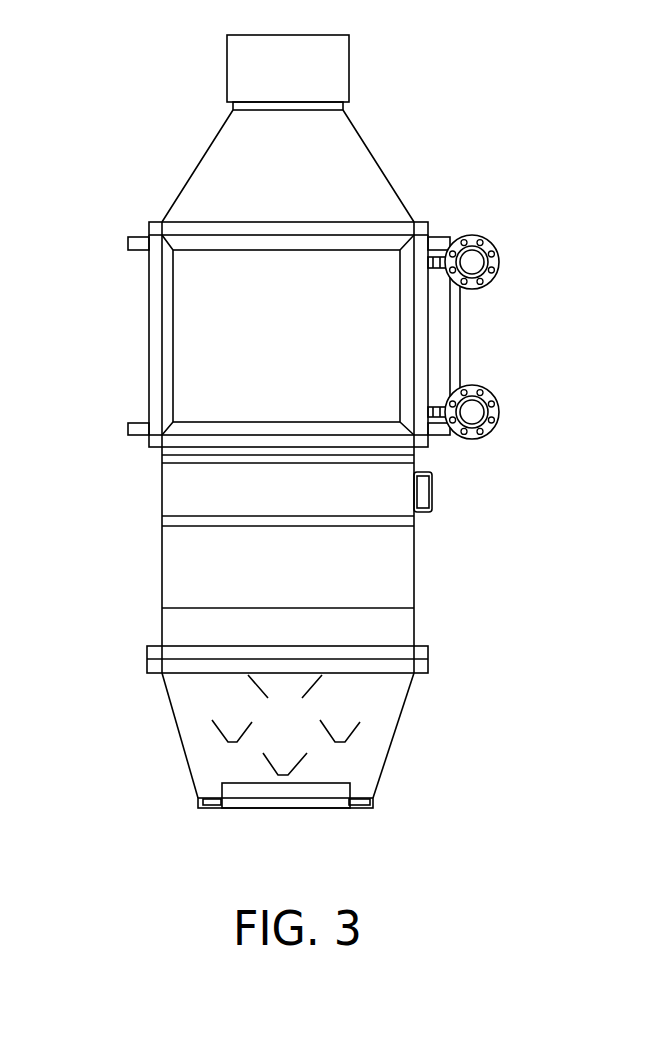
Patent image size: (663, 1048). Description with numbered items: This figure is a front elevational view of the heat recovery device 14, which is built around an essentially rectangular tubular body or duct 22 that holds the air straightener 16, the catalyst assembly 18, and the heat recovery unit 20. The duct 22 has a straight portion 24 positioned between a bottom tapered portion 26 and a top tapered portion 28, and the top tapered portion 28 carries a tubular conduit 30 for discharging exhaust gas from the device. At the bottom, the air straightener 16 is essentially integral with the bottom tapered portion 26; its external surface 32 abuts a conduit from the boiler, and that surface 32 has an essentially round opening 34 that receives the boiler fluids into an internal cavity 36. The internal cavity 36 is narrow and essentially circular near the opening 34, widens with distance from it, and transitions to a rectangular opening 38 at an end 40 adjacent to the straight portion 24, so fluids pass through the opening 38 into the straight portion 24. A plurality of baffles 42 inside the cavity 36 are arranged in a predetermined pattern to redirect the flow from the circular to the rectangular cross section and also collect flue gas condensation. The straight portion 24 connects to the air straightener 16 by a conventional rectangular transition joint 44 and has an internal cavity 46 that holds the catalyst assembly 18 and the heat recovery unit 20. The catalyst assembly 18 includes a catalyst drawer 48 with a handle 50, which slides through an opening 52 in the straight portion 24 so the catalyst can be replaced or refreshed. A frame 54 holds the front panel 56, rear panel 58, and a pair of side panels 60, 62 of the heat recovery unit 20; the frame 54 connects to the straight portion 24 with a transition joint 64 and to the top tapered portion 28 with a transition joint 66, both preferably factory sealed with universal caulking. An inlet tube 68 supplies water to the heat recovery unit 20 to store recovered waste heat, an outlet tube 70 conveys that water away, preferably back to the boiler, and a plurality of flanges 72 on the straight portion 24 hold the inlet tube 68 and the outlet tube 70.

The heat recovery device 14 is at (172, 132).
The air straightener 16 is at (383, 780).
The catalyst assembly 18 is at (162, 487).
The heat recovery unit 20 is at (200, 297).
The duct 22 is at (162, 566).
The straight portion 24 is at (397, 565).
The bottom tapered portion 26 is at (390, 718).
The top tapered portion 28 is at (367, 153).
The tubular conduit 30 is at (340, 63).
The external surface 32 is at (198, 804).
The round opening 34 is at (303, 810).
The internal cavity 36 is at (178, 722).
The rectangular opening 38 is at (404, 672).
The end 40 is at (147, 662).
The baffles 42 is at (212, 737).
The rectangular transition joint 44 is at (162, 633).
The internal cavity 46 is at (406, 594).
The catalyst drawer 48 is at (233, 503).
The handle 50 is at (432, 487).
The opening 52 is at (414, 525).
The frame 54 is at (160, 365).
The front panel 56 is at (415, 336).
The rear panel 58 is at (148, 332).
The side panel 60 is at (424, 446).
The side panel 62 is at (412, 220).
The transition joint 64 is at (138, 436).
The transition joint 66 is at (193, 220).
The inlet tube 68 is at (499, 262).
The outlet tube 70 is at (497, 403).
The flanges 72 is at (128, 243).